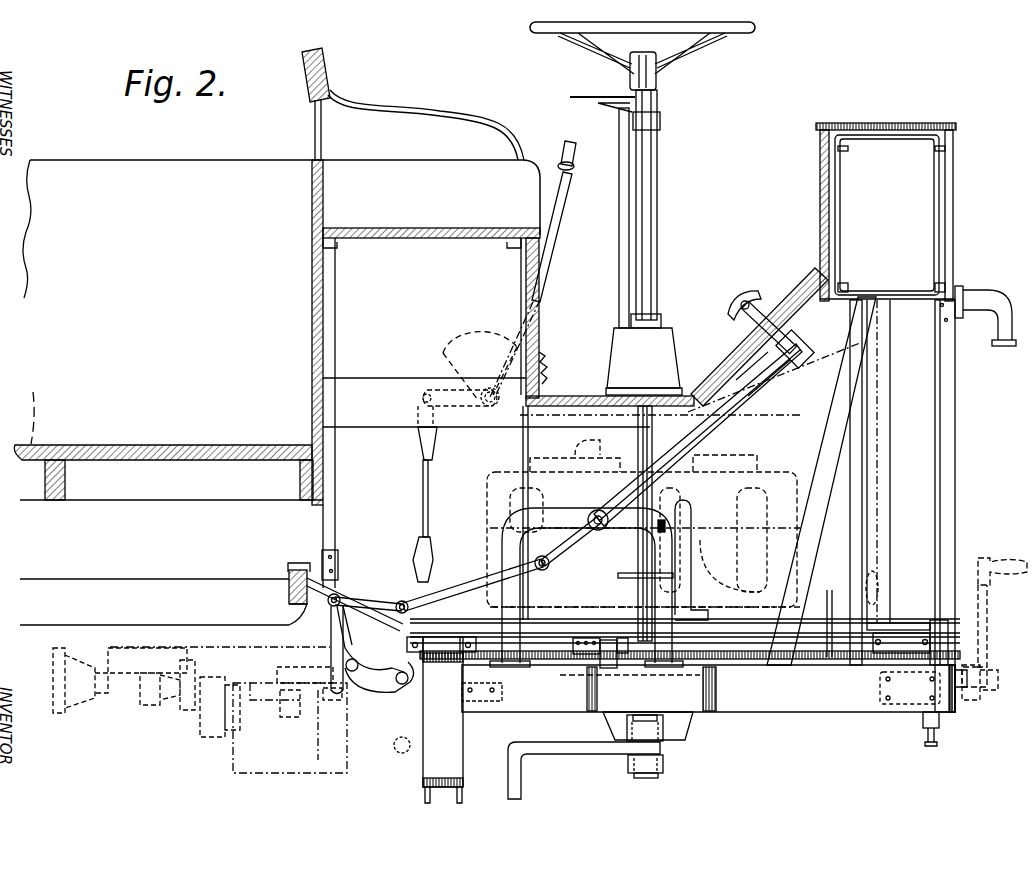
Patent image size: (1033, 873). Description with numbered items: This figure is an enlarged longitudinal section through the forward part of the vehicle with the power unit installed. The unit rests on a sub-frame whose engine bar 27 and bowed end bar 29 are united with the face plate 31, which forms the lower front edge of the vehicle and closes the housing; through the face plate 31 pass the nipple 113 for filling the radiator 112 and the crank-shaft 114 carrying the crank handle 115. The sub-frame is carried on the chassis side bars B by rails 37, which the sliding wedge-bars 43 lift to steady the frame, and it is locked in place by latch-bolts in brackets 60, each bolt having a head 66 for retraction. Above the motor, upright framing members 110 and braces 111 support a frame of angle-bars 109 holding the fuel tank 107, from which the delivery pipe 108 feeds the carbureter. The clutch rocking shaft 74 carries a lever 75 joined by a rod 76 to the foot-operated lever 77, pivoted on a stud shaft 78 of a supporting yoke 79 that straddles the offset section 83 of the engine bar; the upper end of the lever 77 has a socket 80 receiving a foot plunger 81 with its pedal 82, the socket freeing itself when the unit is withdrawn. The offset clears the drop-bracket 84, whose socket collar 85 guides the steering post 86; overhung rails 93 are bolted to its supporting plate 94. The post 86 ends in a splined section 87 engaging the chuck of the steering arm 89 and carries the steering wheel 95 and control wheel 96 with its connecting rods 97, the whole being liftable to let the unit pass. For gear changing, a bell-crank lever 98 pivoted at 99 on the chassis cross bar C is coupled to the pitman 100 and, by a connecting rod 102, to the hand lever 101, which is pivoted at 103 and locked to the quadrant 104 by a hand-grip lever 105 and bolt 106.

The steering wheel 95 is at (756, 28).
The control wheel 96 is at (605, 97).
The connecting rods 97 is at (621, 226).
The steering post 86 is at (647, 240).
The hand lever 101 is at (450, 398).
The hand-grip lever 105 is at (574, 152).
The bolt 106 is at (542, 258).
The quadrant 104 is at (543, 375).
The pivot of hand lever 103 is at (458, 447).
The connecting rod 102 is at (428, 493).
The pedal 82 is at (757, 292).
The foot plunger 81 is at (765, 325).
The socket 80 is at (800, 352).
The foot-operated lever 77 is at (722, 432).
The stud shaft 78 is at (593, 512).
The rod 76 is at (490, 580).
The supporting yoke 79 is at (503, 548).
The supporting plate 94 is at (691, 522).
The overhung rails 93 is at (628, 582).
The fuel tank 107 is at (920, 215).
The angle-bars 109 is at (848, 148).
The nipple 113 is at (985, 330).
The upright framing members 110 is at (862, 444).
The braces 111 is at (820, 470).
The delivery pipe 108 is at (880, 498).
The radiator 112 is at (968, 427).
The face plate 31 is at (955, 496).
The rails 37 is at (832, 642).
The wedge-bars 43 is at (742, 660).
The engine bar 27 is at (812, 700).
The end bar 29 is at (450, 742).
The offset section 83 is at (612, 695).
The socket collar 85 is at (627, 727).
The drop-bracket 84 is at (678, 722).
The splined section 87 is at (645, 776).
The steering arm 89 is at (565, 745).
The brackets 60 is at (922, 722).
The head 66 is at (926, 740).
The crank-shaft 114 is at (964, 714).
The crank handle 115 is at (984, 612).
The side bar B is at (192, 585).
The cross bar C is at (293, 570).
The bell-crank lever 98 is at (360, 592).
The pivot 99 is at (352, 615).
The pitman 100 is at (316, 690).
The lever 75 is at (400, 706).
The rocking shaft 74 is at (396, 742).